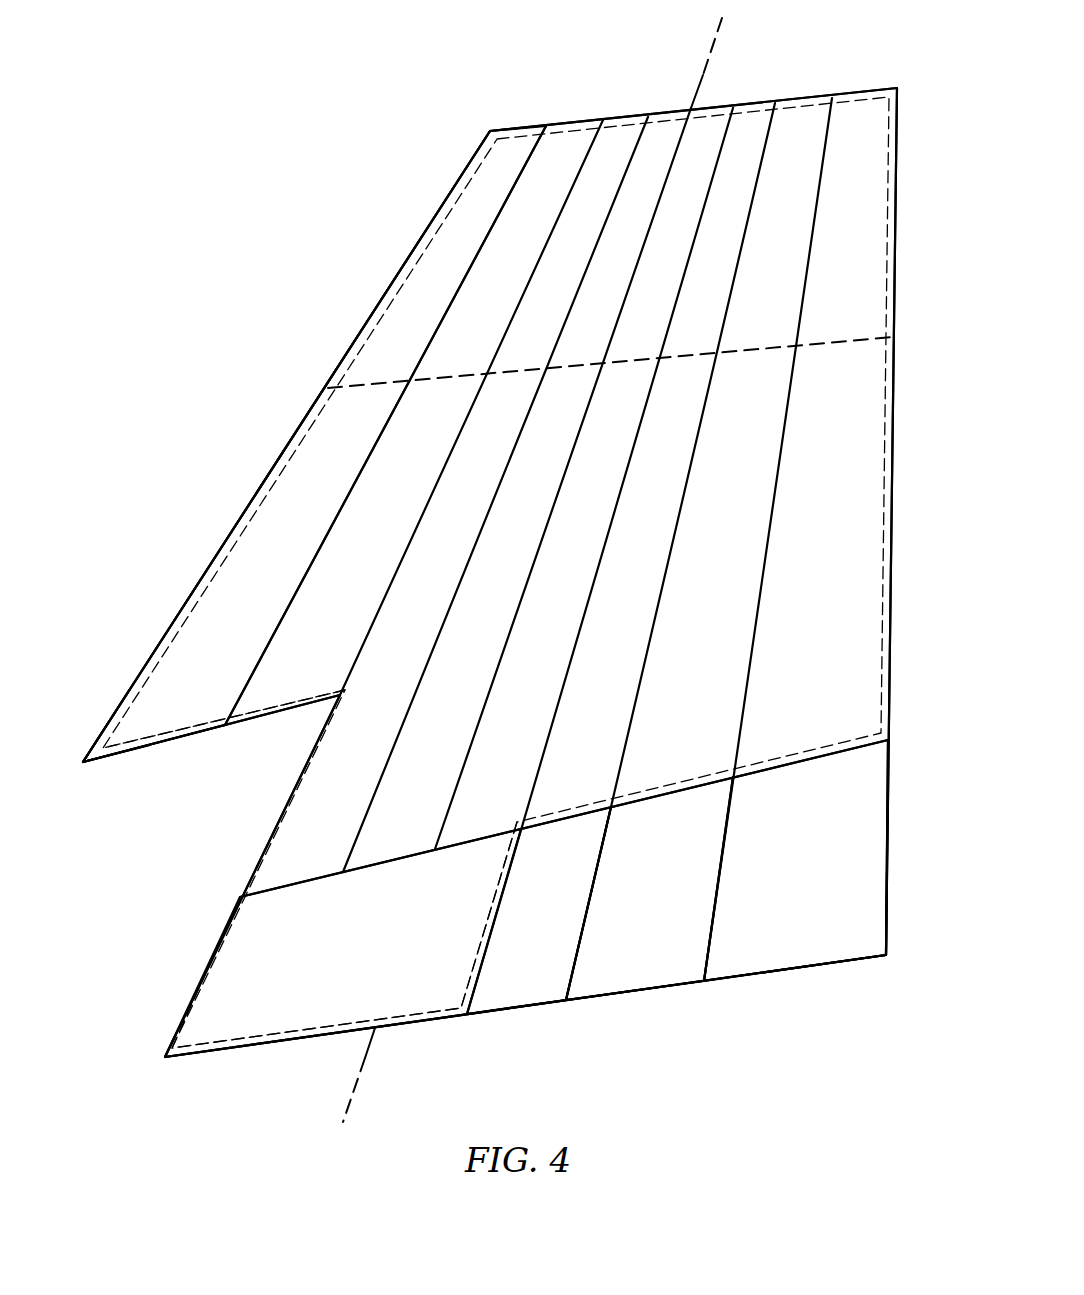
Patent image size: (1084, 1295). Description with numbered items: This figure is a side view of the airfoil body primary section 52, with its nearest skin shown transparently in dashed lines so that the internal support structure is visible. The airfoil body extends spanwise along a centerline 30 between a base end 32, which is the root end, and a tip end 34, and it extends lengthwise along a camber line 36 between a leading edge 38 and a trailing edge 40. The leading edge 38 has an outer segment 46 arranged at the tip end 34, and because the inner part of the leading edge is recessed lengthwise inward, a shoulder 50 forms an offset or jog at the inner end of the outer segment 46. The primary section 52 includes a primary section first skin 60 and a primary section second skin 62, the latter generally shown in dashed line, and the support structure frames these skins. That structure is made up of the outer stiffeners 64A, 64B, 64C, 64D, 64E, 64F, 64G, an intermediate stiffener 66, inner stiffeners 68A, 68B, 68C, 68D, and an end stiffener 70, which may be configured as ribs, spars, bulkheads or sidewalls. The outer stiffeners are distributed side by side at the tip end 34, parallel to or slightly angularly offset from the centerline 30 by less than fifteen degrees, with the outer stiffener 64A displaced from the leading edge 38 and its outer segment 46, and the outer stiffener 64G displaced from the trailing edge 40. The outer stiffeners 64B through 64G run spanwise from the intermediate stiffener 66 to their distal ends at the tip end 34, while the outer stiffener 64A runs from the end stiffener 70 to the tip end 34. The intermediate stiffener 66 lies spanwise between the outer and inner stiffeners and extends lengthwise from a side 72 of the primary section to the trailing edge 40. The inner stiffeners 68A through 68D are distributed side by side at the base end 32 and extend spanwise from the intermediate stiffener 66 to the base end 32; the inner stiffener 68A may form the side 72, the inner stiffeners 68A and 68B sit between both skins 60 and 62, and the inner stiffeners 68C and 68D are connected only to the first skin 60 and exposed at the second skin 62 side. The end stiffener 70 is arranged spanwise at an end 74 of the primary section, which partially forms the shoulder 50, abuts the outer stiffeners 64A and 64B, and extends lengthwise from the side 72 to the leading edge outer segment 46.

The centerline 30 is at (350, 1117).
The base end 32 is at (680, 990).
The tip end 34 is at (605, 120).
The camber line 36 is at (848, 335).
The leading edge 38 is at (178, 597).
The trailing edge 40 is at (893, 400).
The outer segment 46 is at (253, 495).
The shoulder 50 is at (107, 765).
The airfoil body primary section 52 is at (260, 182).
The primary section first skin 60 is at (860, 842).
The primary section second skin 62 is at (890, 613).
The outer stiffener 64A is at (330, 525).
The outer stiffener 64B is at (415, 513).
The outer stiffener 64C is at (485, 513).
The outer stiffener 64D is at (558, 493).
The outer stiffener 64E is at (612, 517).
The outer stiffener 64F is at (668, 543).
The outer stiffener 64G is at (772, 502).
The intermediate stiffener 66 is at (797, 763).
The inner stiffener 68A is at (220, 962).
The inner stiffener 68B is at (490, 942).
The inner stiffener 68C is at (600, 867).
The inner stiffener 68D is at (720, 873).
The end stiffener 70 is at (142, 748).
The side 72 is at (252, 862).
The end 74 is at (257, 743).